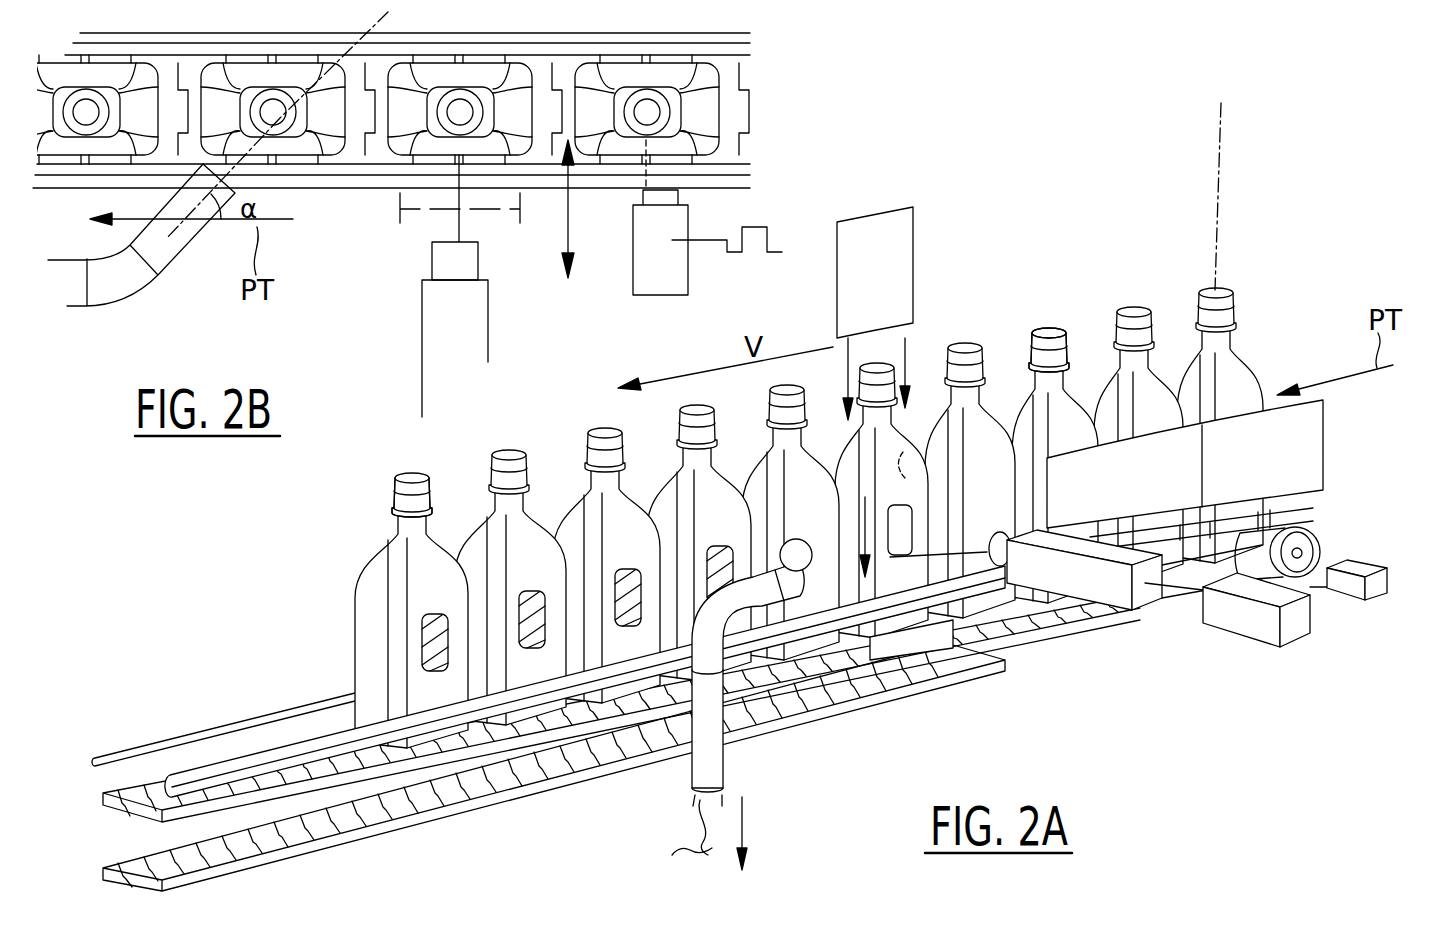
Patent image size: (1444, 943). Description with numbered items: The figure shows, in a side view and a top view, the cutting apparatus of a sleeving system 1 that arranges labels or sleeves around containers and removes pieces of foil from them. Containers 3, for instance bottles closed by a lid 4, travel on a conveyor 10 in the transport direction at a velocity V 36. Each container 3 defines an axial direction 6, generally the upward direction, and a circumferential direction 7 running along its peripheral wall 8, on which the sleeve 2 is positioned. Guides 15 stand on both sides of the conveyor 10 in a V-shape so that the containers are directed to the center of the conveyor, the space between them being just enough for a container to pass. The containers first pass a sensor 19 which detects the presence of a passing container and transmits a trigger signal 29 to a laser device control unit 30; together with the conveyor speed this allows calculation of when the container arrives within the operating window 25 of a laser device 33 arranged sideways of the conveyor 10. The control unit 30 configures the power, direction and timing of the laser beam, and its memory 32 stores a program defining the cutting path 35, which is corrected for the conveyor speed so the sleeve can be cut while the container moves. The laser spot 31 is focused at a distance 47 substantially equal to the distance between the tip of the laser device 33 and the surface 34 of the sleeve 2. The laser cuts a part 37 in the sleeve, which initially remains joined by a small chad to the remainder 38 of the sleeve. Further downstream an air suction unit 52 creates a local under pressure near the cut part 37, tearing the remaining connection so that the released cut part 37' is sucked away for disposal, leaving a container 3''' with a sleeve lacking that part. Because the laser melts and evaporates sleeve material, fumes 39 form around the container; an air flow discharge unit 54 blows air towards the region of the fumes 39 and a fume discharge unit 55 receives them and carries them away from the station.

In FIG. 2A, the sleeving system 1 is at (1062, 190).
In FIG. 2A, the sleeve 2 is at (1250, 382).
In FIG. 2A, the container 3 is at (1072, 411).
In FIG. 2A, the container having a sleeve without a part 3''' is at (379, 610).
In FIG. 2A, the lid 4 is at (1052, 330).
In FIG. 2A, the axial direction 6 is at (1220, 185).
In FIG. 2A, the circumferential direction 7 is at (1242, 337).
In FIG. 2A, the peripheral wall 8 is at (1183, 352).
In FIG. 2A, the conveyor 10 is at (1002, 662).
In FIG. 2A, the guides 15 is at (1225, 465).
In FIG. 2B, the sensor 19 is at (672, 272).
In FIG. 2B, the operating window 25 is at (412, 212).
In FIG. 2B, the trigger signal 29 is at (780, 240).
In FIG. 2A, the laser device control unit 30 is at (1253, 625).
In FIG. 2A, the laser spot 31 is at (900, 560).
In FIG. 2A, the memory 32 is at (1359, 597).
In FIG. 2B, the laser device 33 is at (396, 342).
In FIG. 2A, the laser device 33 is at (1105, 595).
In FIG. 2B, the surface 34 is at (498, 156).
In FIG. 2A, the cutting path 35 is at (913, 510).
In FIG. 2A, the velocity 36 is at (737, 368).
In FIG. 2A, the cut part 37 is at (808, 523).
In FIG. 2A, the released cut part 37' is at (669, 827).
In FIG. 2A, the remainder of the sleeve 38 is at (880, 748).
In FIG. 2A, the fumes 39 is at (905, 455).
In FIG. 2B, the distance 47 is at (575, 235).
In FIG. 2A, the air suction unit 52 is at (813, 633).
In FIG. 2A, the air flow discharge unit 54 is at (906, 250).
In FIG. 2A, the fume discharge unit 55 is at (927, 648).